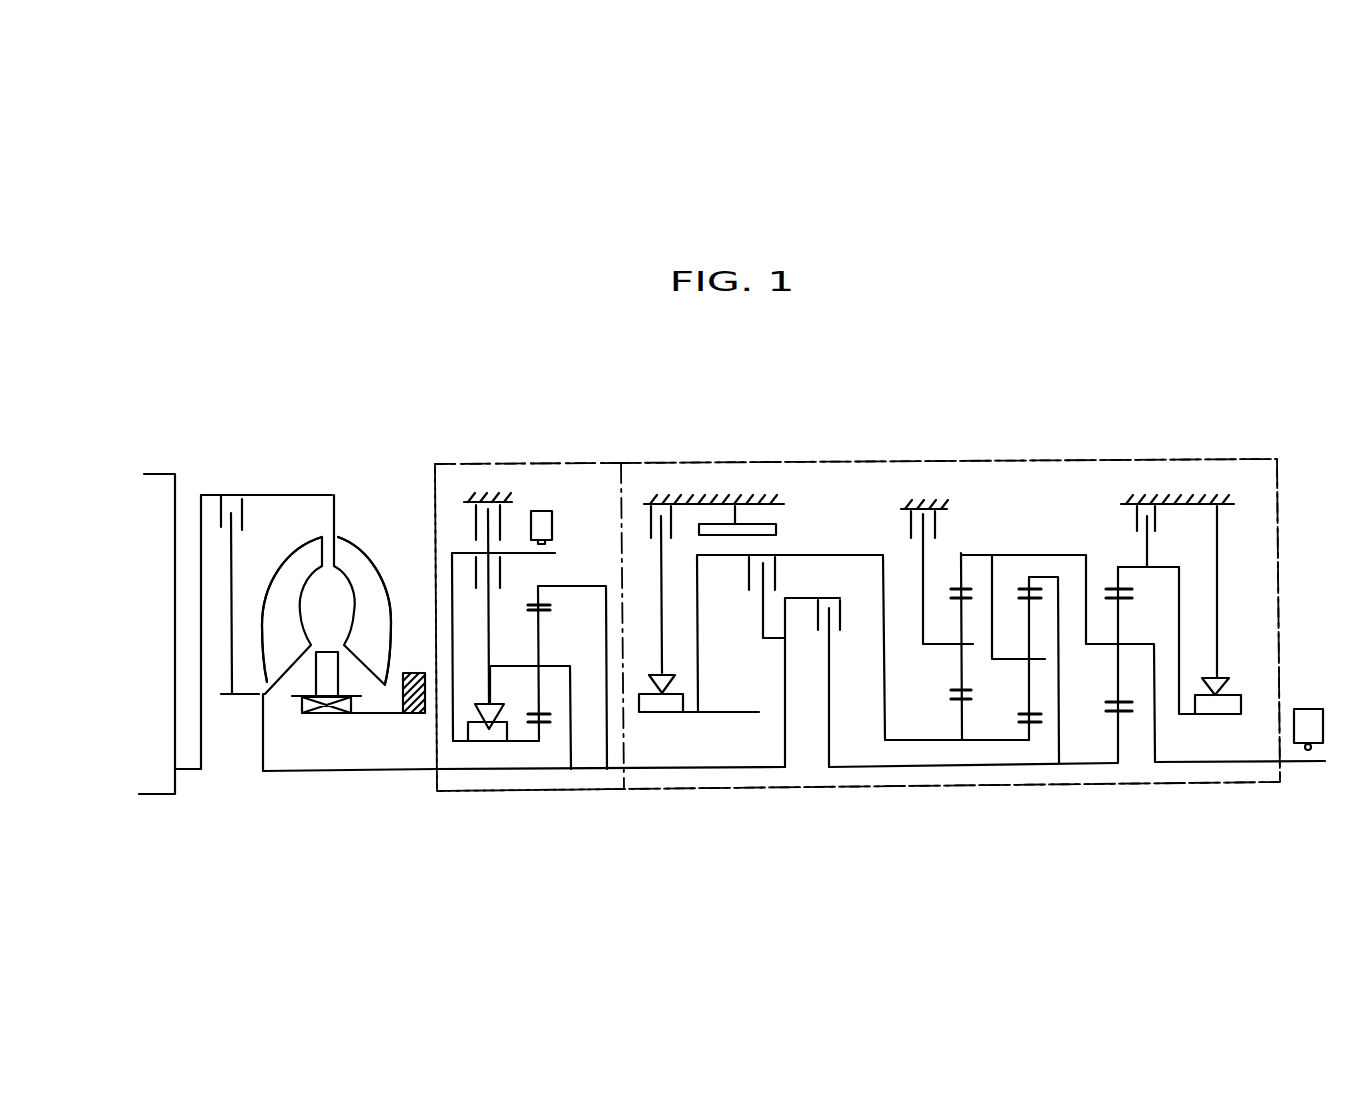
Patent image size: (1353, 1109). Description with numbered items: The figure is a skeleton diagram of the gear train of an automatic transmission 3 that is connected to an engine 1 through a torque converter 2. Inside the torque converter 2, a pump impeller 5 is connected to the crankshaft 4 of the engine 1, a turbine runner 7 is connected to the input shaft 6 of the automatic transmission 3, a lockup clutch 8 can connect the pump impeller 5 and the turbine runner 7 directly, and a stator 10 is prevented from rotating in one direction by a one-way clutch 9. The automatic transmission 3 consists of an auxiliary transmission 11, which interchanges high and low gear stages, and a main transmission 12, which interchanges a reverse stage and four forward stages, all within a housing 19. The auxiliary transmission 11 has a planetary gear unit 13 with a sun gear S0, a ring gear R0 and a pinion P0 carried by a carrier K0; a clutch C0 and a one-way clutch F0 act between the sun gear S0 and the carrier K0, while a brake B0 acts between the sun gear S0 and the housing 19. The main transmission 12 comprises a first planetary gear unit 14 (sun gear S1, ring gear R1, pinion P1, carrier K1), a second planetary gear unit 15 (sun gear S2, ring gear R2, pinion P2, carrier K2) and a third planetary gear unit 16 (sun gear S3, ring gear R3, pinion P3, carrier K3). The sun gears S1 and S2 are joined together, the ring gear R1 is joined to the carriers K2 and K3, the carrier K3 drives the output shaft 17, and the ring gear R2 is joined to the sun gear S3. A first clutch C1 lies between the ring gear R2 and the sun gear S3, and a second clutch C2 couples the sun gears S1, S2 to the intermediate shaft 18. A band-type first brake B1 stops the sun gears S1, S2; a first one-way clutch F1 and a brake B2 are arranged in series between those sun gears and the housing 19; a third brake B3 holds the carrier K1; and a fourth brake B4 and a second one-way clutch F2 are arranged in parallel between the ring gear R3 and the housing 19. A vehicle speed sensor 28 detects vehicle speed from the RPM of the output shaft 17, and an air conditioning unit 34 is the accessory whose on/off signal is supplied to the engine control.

The engine 1 is at (165, 484).
The torque converter 2 is at (334, 483).
The automatic transmission 3 is at (815, 417).
The crankshaft 4 is at (192, 773).
The pump impeller 5 is at (360, 567).
The input shaft 6 is at (350, 769).
The turbine runner 7 is at (303, 554).
The lockup clutch 8 is at (217, 502).
The one-way clutch 9 is at (319, 715).
The stator 10 is at (320, 663).
The auxiliary transmission 11 is at (515, 464).
The main transmission 12 is at (1100, 459).
The planetary gear unit 13 is at (533, 746).
The first planetary gear unit 14 is at (949, 746).
The second planetary gear unit 15 is at (1027, 746).
The third planetary gear unit 16 is at (1128, 767).
The output shaft 17 is at (1255, 762).
The intermediate shaft 18 is at (745, 768).
The housing 19 is at (411, 713).
The vehicle speed sensor 28 is at (1309, 721).
The air conditioning unit 34 is at (552, 522).
The brake B0 is at (473, 520).
The clutch C0 is at (475, 577).
The ring gear R0 is at (535, 596).
The pinion P0 is at (528, 610).
The carrier K0 is at (550, 666).
The sun gear S0 is at (526, 712).
The one-way clutch F0 is at (483, 730).
The first brake B1 is at (752, 524).
The brake B2 is at (645, 518).
The third brake B3 is at (905, 525).
The fourth brake B4 is at (1158, 518).
The first clutch C1 is at (846, 600).
The second clutch C2 is at (748, 575).
The first one-way clutch F1 is at (658, 712).
The second one-way clutch F2 is at (1222, 713).
The ring gear R1 is at (962, 586).
The ring gear R2 is at (1027, 580).
The ring gear R3 is at (1114, 584).
The pinion P1 is at (957, 600).
The pinion P2 is at (1020, 710).
The pinion P3 is at (1110, 695).
The carrier K1 is at (942, 648).
The carrier K2 is at (996, 657).
The carrier K3 is at (1126, 644).
The sun gear S1 is at (948, 702).
The sun gear S2 is at (1019, 718).
The sun gear S3 is at (1109, 716).